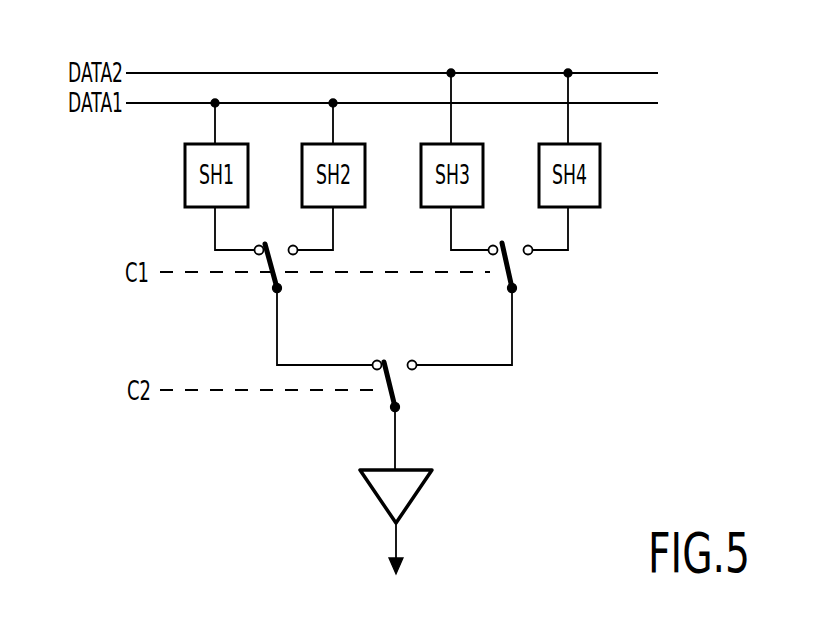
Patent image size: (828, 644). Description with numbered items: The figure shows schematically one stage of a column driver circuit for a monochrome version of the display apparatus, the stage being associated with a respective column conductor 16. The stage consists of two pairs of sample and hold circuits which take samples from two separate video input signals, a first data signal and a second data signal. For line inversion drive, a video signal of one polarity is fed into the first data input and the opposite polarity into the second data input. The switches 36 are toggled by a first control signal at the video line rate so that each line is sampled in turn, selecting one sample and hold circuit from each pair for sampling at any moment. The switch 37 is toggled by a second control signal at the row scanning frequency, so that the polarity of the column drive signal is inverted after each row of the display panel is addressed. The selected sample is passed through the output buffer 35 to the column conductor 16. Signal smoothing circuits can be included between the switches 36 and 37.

The switches 36 is at (273, 283).
The switch 37 is at (400, 394).
The output buffer 35 is at (418, 494).
The column conductor 16 is at (399, 567).